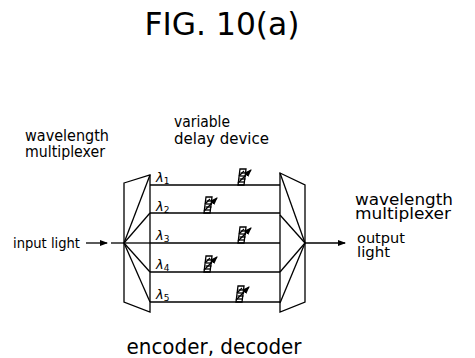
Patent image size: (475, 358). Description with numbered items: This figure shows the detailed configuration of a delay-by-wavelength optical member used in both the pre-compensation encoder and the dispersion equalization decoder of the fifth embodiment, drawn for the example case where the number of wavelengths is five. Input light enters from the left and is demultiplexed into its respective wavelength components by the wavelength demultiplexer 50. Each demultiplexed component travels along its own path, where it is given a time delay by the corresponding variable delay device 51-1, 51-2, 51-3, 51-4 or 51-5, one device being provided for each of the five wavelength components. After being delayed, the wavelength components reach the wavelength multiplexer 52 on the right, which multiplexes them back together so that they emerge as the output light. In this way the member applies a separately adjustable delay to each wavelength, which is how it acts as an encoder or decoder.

The wavelength demultiplexer 50 is at (126, 186).
The wavelength multiplexer 52 is at (307, 203).
The variable delay device 51-1 is at (250, 180).
The variable delay device 51-2 is at (203, 188).
The variable delay device 51-3 is at (254, 207).
The variable delay device 51-4 is at (214, 243).
The variable delay device 51-5 is at (233, 300).